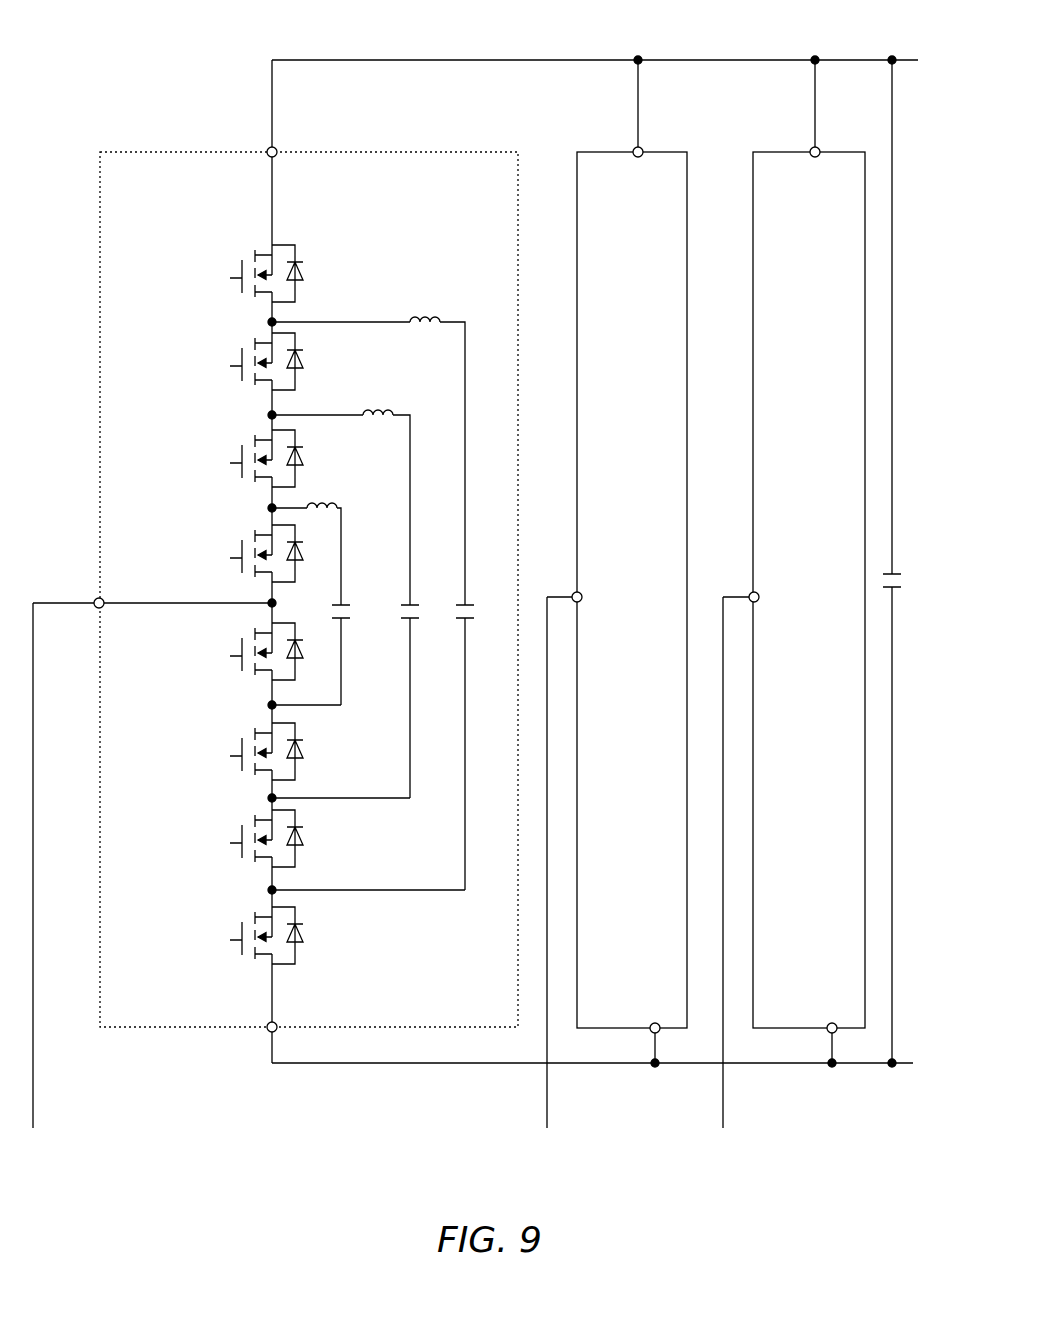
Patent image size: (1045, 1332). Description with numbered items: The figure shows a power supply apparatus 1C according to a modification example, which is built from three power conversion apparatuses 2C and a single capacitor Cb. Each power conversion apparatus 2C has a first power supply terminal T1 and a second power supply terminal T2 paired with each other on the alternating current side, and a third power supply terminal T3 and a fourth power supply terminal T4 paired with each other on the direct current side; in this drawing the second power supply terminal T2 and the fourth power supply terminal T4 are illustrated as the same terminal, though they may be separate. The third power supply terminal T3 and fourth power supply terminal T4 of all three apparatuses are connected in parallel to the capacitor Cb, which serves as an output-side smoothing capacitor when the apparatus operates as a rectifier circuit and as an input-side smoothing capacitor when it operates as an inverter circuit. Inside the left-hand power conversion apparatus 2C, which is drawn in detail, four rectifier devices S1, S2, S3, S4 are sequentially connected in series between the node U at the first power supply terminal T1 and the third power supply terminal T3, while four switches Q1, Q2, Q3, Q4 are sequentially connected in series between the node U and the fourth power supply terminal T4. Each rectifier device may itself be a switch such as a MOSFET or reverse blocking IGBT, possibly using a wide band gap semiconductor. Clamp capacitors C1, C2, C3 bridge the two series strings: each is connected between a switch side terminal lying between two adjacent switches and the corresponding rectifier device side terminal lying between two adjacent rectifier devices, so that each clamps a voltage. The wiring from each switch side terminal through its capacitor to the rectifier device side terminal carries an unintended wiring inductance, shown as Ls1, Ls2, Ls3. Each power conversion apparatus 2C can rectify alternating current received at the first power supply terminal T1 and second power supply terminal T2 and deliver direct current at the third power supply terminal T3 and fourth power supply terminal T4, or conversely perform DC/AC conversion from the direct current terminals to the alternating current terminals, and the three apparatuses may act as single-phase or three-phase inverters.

The power supply apparatus 1C is at (135, 35).
The power conversion apparatus 2C is at (160, 148).
The third power supply terminal T3 is at (528, 166).
The first power supply terminal T1 is at (444, 602).
The second power supply terminal T2 is at (562, 1017).
The fourth power supply terminal T4 is at (562, 1017).
The rectifier device S4 is at (230, 278).
The rectifier device S3 is at (230, 366).
The rectifier device S2 is at (230, 463).
The rectifier device S1 is at (230, 558).
The switch Q1 is at (230, 656).
The switch Q2 is at (230, 756).
The switch Q3 is at (230, 843).
The switch Q4 is at (230, 940).
The node U is at (284, 610).
The wiring inductance Ls3 is at (430, 318).
The wiring inductance Ls2 is at (383, 410).
The wiring inductance Ls1 is at (328, 502).
The capacitor C1 is at (343, 603).
The capacitor C2 is at (412, 603).
The capacitor C3 is at (466, 603).
The capacitor Cb is at (897, 573).